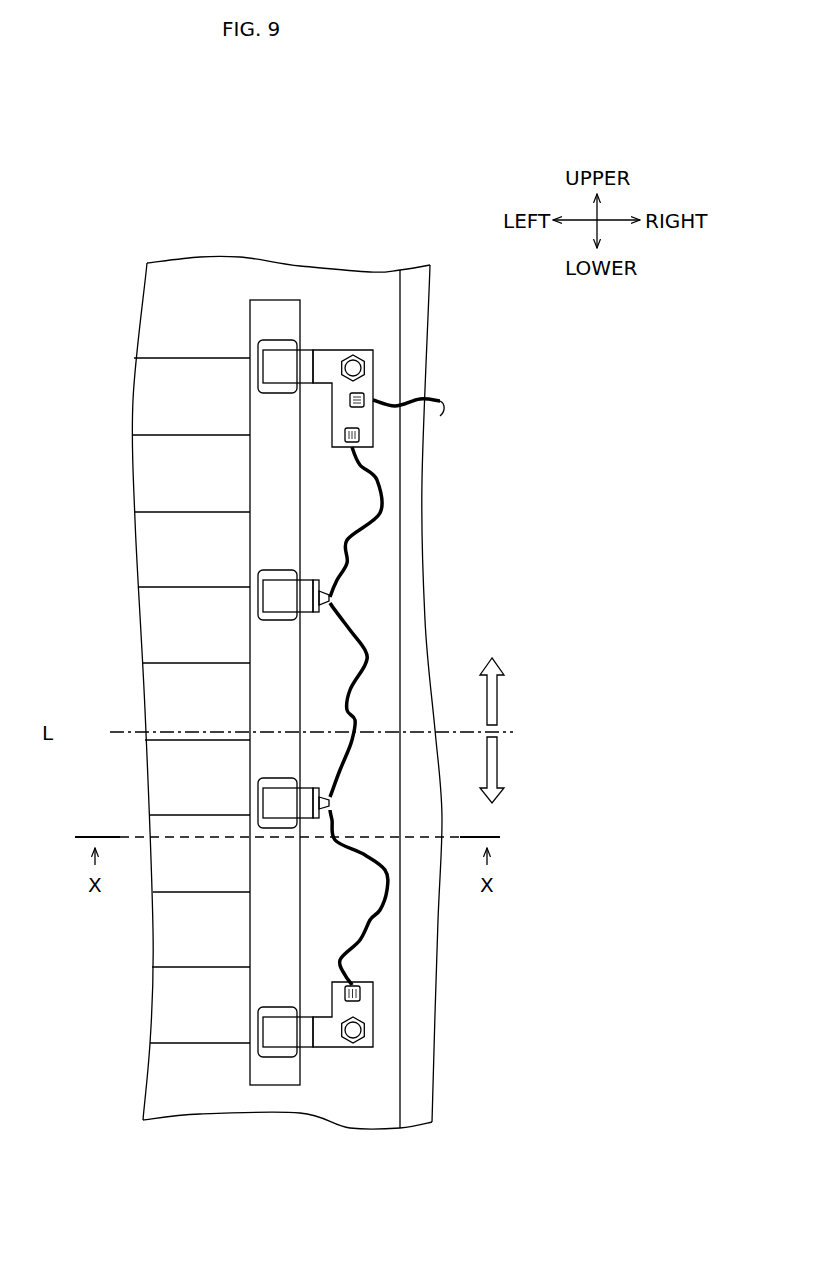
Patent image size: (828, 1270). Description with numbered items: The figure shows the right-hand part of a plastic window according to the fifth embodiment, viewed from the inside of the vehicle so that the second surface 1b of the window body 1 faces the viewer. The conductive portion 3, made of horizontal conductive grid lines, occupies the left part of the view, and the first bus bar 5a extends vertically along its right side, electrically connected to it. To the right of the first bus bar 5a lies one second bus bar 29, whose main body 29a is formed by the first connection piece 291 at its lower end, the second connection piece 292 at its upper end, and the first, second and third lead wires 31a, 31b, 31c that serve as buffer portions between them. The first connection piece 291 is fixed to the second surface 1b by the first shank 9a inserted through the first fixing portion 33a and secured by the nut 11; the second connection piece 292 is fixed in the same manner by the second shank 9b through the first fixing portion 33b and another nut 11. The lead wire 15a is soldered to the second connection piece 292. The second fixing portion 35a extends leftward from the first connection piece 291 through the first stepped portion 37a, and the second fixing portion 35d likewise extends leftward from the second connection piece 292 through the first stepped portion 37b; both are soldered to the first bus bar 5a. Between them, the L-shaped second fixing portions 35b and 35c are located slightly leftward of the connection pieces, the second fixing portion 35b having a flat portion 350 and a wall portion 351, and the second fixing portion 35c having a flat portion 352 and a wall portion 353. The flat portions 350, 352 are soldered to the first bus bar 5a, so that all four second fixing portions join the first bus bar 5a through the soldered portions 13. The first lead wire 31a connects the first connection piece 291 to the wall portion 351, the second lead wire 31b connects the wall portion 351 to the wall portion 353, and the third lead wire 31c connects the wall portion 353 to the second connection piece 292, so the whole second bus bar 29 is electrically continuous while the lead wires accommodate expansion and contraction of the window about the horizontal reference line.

The window body 1 is at (408, 292).
The second surface 1b is at (373, 301).
The conductive portion 3 is at (153, 357).
The first bus bar 5a is at (271, 318).
The first shank 9a is at (369, 1038).
The second shank 9b is at (346, 357).
The nut 11 is at (362, 356).
The soldered portion 13 is at (275, 372).
The lead wire 15a is at (410, 396).
The second bus bar 29 is at (349, 1057).
The main body 29a is at (363, 622).
The first lead wire 31a is at (384, 920).
The second lead wire 31b is at (372, 651).
The third lead wire 31c is at (383, 492).
The first fixing portion 33a is at (373, 1025).
The first fixing portion 33b is at (373, 362).
The second fixing portion 35a is at (262, 1045).
The second fixing portion 35b is at (262, 812).
The second fixing portion 35c is at (262, 606).
The second fixing portion 35d is at (262, 362).
The first stepped portion 37a is at (313, 1030).
The first stepped portion 37b is at (310, 372).
The first connection piece 291 is at (370, 1005).
The second connection piece 292 is at (366, 426).
The flat portion 350 is at (262, 781).
The wall portion 351 is at (332, 803).
The flat portion 352 is at (262, 578).
The wall portion 353 is at (332, 597).